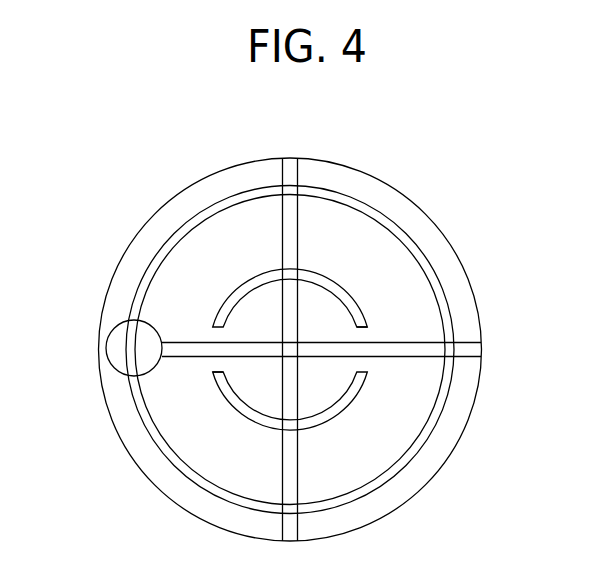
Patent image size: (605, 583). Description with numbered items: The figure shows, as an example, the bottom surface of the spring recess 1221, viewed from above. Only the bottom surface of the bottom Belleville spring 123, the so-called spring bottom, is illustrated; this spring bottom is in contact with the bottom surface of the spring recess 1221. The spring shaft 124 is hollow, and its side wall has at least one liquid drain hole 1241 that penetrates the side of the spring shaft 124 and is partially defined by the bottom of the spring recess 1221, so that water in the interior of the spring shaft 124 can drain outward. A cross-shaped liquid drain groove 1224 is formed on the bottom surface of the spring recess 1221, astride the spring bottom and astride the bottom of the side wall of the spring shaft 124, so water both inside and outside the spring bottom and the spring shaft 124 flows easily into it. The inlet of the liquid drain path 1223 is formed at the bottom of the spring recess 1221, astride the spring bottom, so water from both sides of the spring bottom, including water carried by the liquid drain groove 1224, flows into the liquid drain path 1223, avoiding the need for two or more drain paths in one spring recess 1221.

The Belleville spring 123 is at (447, 300).
The spring shaft 124 is at (337, 420).
The spring recess 1221 is at (470, 414).
The liquid drain path 1223 is at (113, 348).
The liquid drain groove 1224 is at (473, 350).
The liquid drain hole 1241 is at (366, 336).